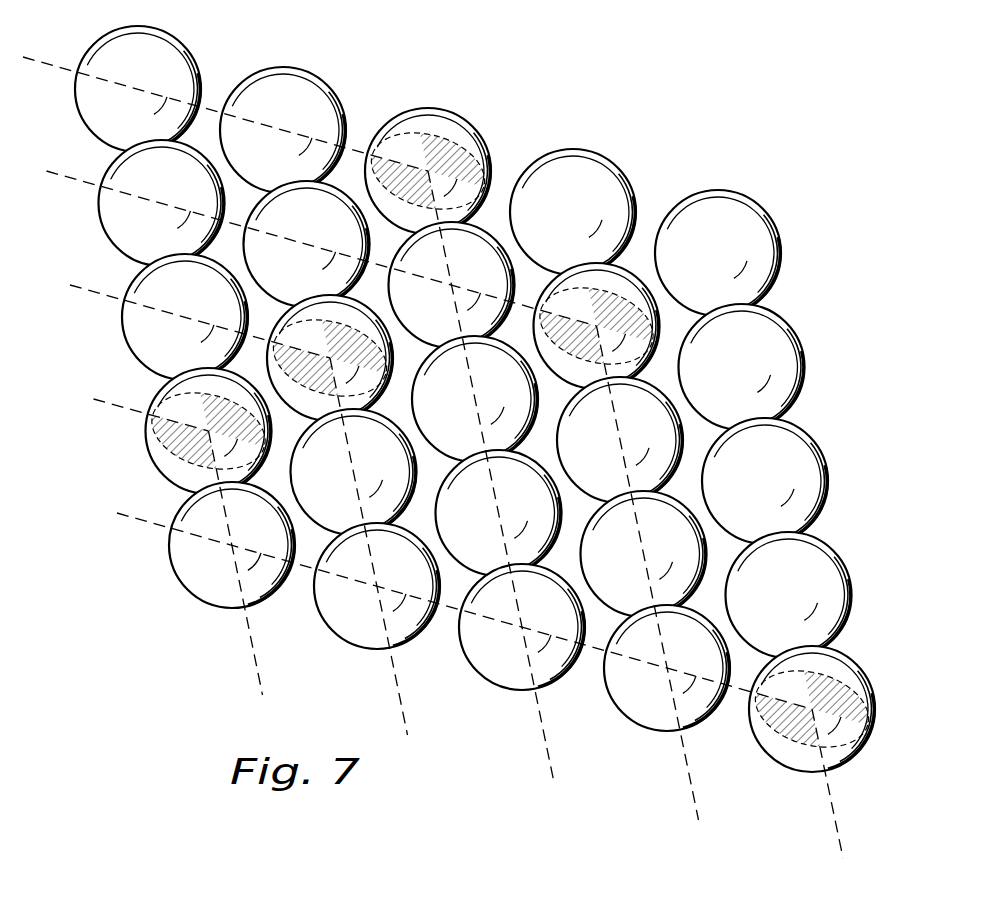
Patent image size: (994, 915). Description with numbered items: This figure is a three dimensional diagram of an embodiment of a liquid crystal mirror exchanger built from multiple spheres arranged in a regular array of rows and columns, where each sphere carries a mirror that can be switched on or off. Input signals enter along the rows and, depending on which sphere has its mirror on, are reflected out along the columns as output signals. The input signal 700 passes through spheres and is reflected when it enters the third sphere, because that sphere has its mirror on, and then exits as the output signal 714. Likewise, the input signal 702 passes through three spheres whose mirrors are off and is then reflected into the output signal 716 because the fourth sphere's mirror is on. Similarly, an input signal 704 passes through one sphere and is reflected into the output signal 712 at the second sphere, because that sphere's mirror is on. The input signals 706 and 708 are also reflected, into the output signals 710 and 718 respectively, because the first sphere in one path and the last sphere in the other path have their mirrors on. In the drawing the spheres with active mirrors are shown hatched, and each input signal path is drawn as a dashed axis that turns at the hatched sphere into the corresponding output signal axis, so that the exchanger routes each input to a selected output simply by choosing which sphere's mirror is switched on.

The input signal 700 is at (45, 62).
The input signal 702 is at (72, 178).
The input signal 704 is at (95, 293).
The input signal 706 is at (115, 406).
The input signal 708 is at (137, 520).
The output signal 710 is at (252, 650).
The output signal 712 is at (397, 692).
The output signal 714 is at (542, 732).
The output signal 716 is at (687, 774).
The output signal 718 is at (833, 815).